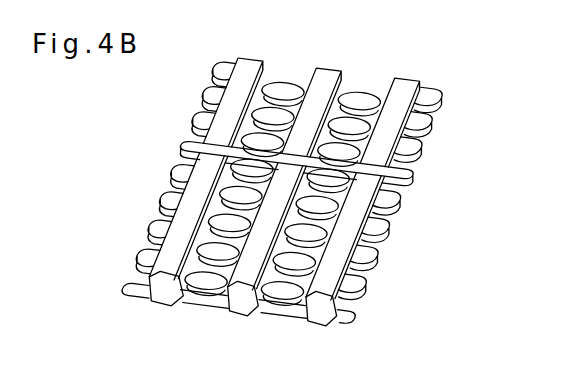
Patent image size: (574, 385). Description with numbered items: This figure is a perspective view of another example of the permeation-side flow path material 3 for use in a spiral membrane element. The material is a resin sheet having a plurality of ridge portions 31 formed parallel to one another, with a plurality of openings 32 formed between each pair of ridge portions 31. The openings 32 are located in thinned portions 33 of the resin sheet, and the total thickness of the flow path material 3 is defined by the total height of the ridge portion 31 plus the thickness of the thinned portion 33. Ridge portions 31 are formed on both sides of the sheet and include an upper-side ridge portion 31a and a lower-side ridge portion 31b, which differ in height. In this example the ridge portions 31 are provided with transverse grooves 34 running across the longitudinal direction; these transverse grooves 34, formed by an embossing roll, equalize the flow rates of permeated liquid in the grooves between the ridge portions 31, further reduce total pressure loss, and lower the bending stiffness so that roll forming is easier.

The permeation-side flow path material 3 is at (327, 194).
The ridge portion 31 is at (300, 194).
The upper-side ridge portion 31a is at (308, 297).
The lower-side ridge portion 31b is at (313, 323).
The opening 32 is at (342, 149).
The thinned portion 33 is at (205, 303).
The transverse groove 34 is at (412, 168).